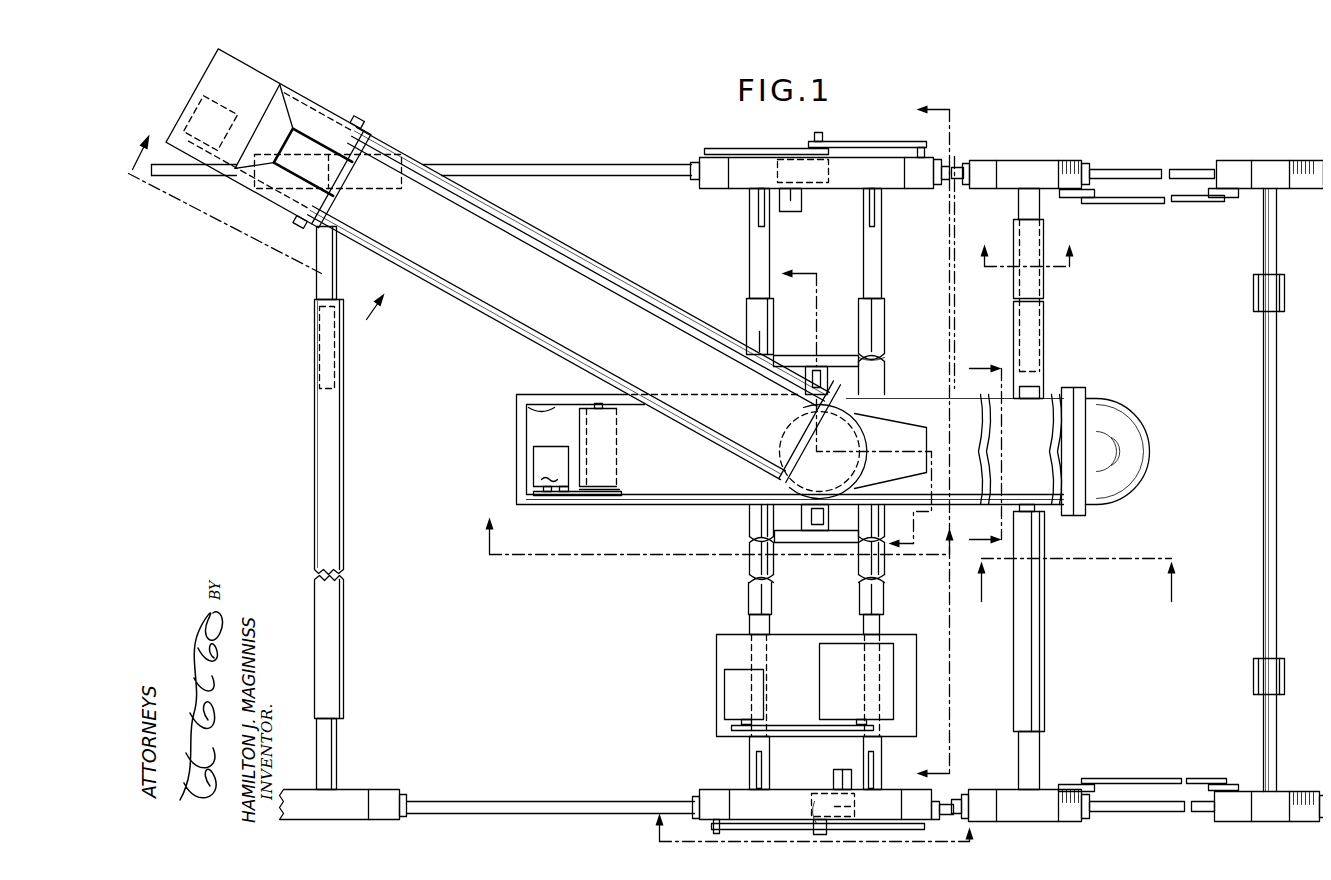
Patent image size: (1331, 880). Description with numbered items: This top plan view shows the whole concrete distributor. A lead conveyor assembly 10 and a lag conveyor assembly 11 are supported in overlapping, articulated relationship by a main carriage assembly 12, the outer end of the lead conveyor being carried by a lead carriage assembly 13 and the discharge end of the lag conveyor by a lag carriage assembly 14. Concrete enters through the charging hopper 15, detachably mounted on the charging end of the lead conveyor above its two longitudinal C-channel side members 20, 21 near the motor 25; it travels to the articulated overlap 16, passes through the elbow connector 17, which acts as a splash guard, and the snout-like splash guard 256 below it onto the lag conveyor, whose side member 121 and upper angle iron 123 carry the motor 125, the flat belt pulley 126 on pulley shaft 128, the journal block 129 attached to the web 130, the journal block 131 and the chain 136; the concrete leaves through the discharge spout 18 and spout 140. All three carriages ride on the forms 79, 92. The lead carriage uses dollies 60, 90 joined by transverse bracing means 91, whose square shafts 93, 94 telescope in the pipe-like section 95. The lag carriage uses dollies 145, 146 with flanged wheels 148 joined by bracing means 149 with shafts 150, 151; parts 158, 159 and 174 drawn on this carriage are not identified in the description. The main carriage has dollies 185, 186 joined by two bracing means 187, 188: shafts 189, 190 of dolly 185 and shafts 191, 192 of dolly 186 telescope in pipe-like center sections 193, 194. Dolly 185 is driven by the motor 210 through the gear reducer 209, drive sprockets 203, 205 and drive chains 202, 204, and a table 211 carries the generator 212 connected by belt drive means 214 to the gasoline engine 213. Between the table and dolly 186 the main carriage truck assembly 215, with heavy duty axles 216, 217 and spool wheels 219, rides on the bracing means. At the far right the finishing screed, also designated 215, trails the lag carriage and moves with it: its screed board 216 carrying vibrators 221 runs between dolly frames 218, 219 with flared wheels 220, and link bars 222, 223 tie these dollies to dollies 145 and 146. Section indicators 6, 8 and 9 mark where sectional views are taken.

The lead conveyor assembly 10 is at (576, 242).
The lag conveyor assembly 11 is at (930, 384).
The main carriage assembly 12 is at (640, 638).
The lead carriage assembly 13 is at (217, 397).
The lag carriage assembly 14 is at (1100, 385).
The charging hopper 15 is at (306, 89).
The articulated overlap 16 is at (875, 401).
The elbow connector 17 is at (927, 463).
The discharge spout 18 is at (1143, 420).
The longitudinal C-channel structural side member 20 is at (456, 302).
The longitudinal C-channel structural side member 21 is at (525, 226).
The motor 25 is at (188, 102).
The dolly 60 is at (368, 190).
The form 79 is at (536, 168).
The dolly 90 is at (362, 786).
The transverse bracing means 91 is at (341, 498).
The form 92 is at (508, 800).
The hollow square structural member 93 is at (322, 272).
The structural member 94 is at (334, 743).
The central pipe-like section 95 is at (319, 487).
The longitudinal C-channel structural side member 121 is at (956, 386).
The upper angle iron 123 is at (524, 444).
The motor 125 is at (551, 469).
The flat belt pulley 126 is at (622, 462).
The pulley shaft 128 is at (608, 497).
The journal block 129 is at (597, 495).
The web 130 is at (521, 405).
The journal block 131 is at (576, 397).
The chain 136 is at (565, 493).
The spout 140 is at (1150, 459).
The dolly 145 is at (1041, 157).
The dolly 146 is at (1042, 797).
The flanged wheels 148 is at (966, 161).
The telescoping bracing means 149 is at (1044, 612).
The structural member 150 is at (1040, 208).
The structural member 151 is at (1032, 758).
The column bracket 158 is at (1037, 508).
The column stop 159 is at (1037, 392).
The column upper block 174 is at (1044, 294).
The wheeled carrying dolly 185 is at (942, 790).
The wheeled carrying dolly 186 is at (918, 191).
The telescopable bracing means 187 is at (890, 597).
The telescopable bracing means 188 is at (742, 605).
The structural member 189 is at (881, 768).
The structural member 190 is at (756, 746).
The structural member 191 is at (873, 246).
The structural member 192 is at (755, 238).
The pipe-like center section 193 is at (871, 303).
The pipe-like center section 194 is at (750, 302).
The drive chain 202 is at (905, 826).
The drive sprocket 203 is at (813, 805).
The drive chain 204 is at (771, 825).
The drive sprocket 205 is at (812, 808).
The gear reducer 209 is at (854, 808).
The motor 210 is at (843, 768).
The table 211 is at (918, 713).
The generator 212 is at (734, 692).
The gasoline engine 213 is at (894, 683).
The belt drive means 214 is at (800, 726).
The main carriage truck assembly 215 is at (842, 358).
The heavy duty axle 216 is at (803, 360).
The heavy duty axle 217 is at (800, 544).
The screed dolly frame 218 is at (1284, 160).
The spool roller wheel 219 is at (886, 359).
The flared wheel 220 is at (1213, 167).
The vibrator 221 is at (1264, 284).
The rigid link bar 222 is at (1168, 201).
The link bar 223 is at (1173, 762).
The snout-like splash guard 256 is at (915, 451).
The section line 6- 6 is at (265, 219).
The section line 8- 8 is at (709, 536).
The section line 9- 9 is at (857, 409).